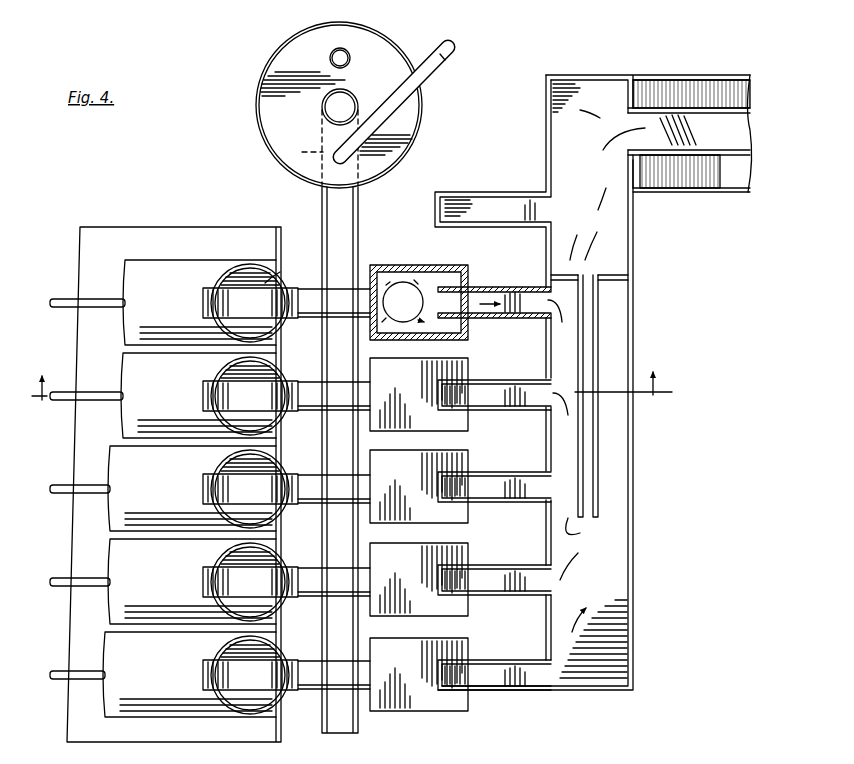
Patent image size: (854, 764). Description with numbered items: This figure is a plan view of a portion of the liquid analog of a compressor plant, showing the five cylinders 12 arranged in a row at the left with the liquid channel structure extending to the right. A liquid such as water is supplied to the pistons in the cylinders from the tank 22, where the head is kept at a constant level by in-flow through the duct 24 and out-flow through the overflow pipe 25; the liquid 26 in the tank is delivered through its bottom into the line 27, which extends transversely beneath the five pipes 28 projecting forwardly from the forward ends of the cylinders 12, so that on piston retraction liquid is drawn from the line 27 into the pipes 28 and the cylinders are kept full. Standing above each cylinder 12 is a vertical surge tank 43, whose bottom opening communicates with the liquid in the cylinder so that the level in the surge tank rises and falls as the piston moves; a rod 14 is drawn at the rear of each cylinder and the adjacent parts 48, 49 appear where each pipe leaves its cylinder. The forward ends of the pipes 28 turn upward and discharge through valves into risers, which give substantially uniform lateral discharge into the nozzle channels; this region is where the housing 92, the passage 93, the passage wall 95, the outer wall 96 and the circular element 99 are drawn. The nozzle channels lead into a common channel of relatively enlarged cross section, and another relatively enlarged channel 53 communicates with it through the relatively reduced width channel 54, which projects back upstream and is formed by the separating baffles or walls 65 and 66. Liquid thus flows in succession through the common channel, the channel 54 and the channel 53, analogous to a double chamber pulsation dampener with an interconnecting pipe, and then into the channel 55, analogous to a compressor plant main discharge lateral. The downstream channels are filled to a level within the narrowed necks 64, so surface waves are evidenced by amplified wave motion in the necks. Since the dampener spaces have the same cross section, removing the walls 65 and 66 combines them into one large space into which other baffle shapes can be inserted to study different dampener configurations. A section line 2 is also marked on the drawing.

The section line 2- 2 is at (352, 398).
The cylinder 12 is at (176, 252).
The piston rod 14 is at (72, 301).
The tank 22 is at (390, 42).
The duct 24 is at (433, 68).
The overflow pipe 25 is at (350, 59).
The liquid 26 is at (305, 121).
The line 27 is at (366, 94).
The pipes 28 is at (318, 318).
The vertical surge tank 43 is at (247, 254).
The crank pin 48 is at (286, 272).
The crosshead 49 is at (203, 306).
The enlarged channel 53 is at (546, 160).
The reduced width channel 54 is at (585, 385).
The channel 55 is at (691, 190).
The narrowed necks 64 is at (700, 150).
The separating baffle 65 is at (584, 424).
The separating baffle 66 is at (600, 278).
The valve housing 92 is at (437, 266).
The valve passage 93 is at (490, 288).
The passage wall 95 is at (484, 318).
The manifold wall 96 is at (633, 342).
The rotary valve 99 is at (409, 301).